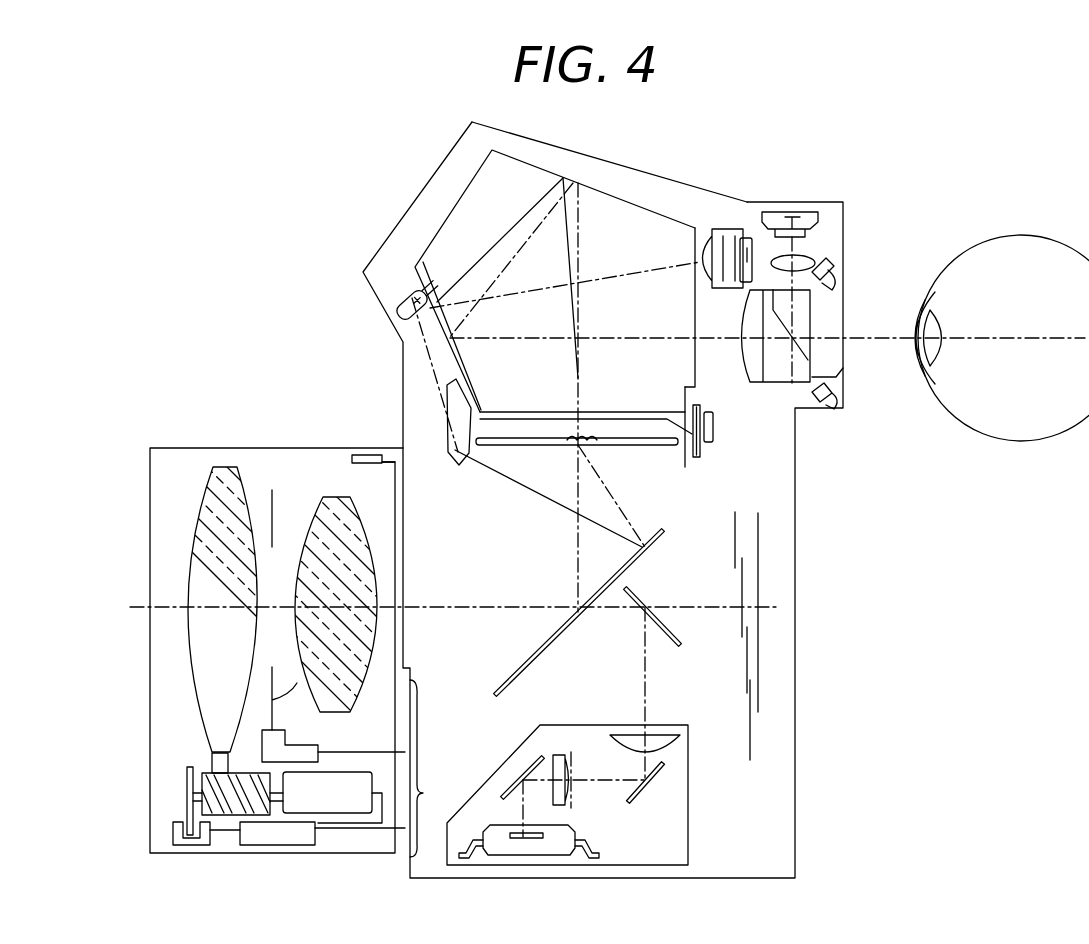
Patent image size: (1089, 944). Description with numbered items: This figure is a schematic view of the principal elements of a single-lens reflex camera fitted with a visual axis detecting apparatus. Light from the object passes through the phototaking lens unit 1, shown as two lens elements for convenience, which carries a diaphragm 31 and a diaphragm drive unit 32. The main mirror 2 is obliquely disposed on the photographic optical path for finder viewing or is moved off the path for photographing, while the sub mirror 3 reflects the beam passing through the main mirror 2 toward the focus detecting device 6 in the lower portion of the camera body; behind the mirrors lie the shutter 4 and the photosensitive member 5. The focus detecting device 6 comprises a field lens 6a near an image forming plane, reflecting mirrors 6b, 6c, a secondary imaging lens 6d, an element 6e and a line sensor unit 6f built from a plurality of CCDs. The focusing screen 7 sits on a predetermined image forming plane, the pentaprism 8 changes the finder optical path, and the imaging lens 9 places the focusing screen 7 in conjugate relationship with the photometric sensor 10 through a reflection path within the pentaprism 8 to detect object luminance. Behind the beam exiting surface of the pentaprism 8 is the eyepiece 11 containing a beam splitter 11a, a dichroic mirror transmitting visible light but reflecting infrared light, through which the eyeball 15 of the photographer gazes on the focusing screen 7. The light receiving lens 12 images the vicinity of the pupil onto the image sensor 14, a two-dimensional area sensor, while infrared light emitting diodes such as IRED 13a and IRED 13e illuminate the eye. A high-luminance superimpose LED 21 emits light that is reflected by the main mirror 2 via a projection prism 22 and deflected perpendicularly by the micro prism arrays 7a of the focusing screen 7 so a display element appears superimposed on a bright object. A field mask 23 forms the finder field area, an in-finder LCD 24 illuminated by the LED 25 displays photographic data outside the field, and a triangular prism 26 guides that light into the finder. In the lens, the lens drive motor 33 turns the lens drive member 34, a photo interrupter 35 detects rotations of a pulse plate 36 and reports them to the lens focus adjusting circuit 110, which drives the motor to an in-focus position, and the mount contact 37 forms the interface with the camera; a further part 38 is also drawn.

The phototaking lens unit 1 is at (207, 467).
The main mirror 2 is at (548, 640).
The sub mirror 3 is at (680, 648).
The shutter 4 is at (737, 541).
The photosensitive member 5 is at (760, 665).
The focus detecting device 6 is at (690, 840).
The field lens 6a is at (685, 740).
The reflecting mirror 6b is at (662, 792).
The reflecting mirror 6c is at (497, 777).
The secondary imaging lens 6d is at (553, 760).
The filter 6e is at (573, 760).
The line sensor unit 6f is at (545, 840).
The focusing screen 7 is at (653, 447).
The micro prism arrays 7a is at (597, 440).
The pentaprism 8 is at (448, 230).
The imaging lens 9 is at (712, 236).
The photometric sensor 10 is at (746, 238).
The eyepiece 11 is at (748, 352).
The beam splitter 11a is at (803, 358).
The light receiving lens 12 is at (820, 262).
The infrared light emitting diode 13a is at (843, 408).
The infrared light emitting diode 13e is at (835, 268).
The image sensor 14 is at (812, 214).
The eyeball 15 is at (1035, 250).
The superimpose LED 21 is at (396, 312).
The projection prism 22 is at (452, 402).
The field mask 23 is at (500, 418).
The in-finder LCD 24 is at (702, 455).
The LED (F-LED) 25 is at (715, 425).
The triangular prism 26 is at (685, 465).
The diaphragm 31 is at (275, 667).
The diaphragm drive unit 32 is at (318, 748).
The lens drive motor 33 is at (345, 815).
The lens drive member 34 is at (210, 770).
The photo interrupter 35 is at (205, 845).
The pulse plate 36 is at (187, 800).
The mount contact 37 is at (431, 768).
The lens mount 38 is at (365, 455).
The lens focus adjusting circuit 110 is at (283, 845).